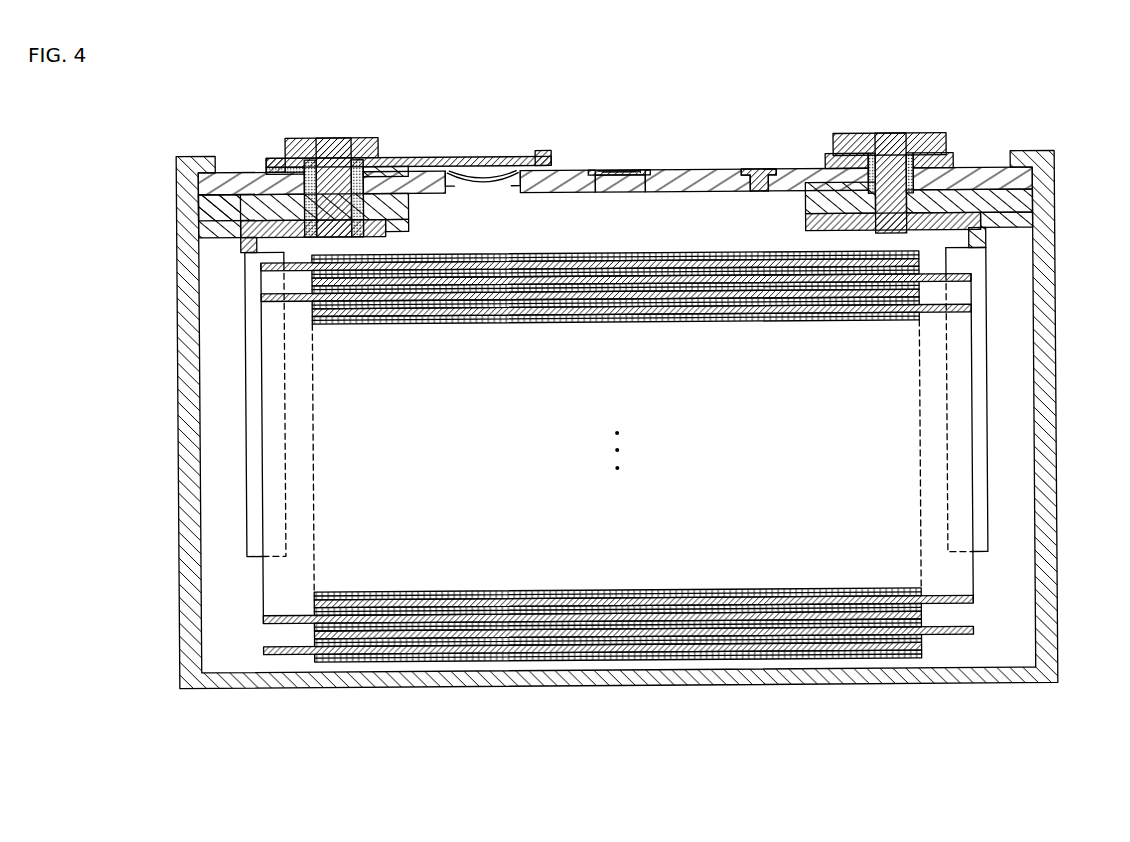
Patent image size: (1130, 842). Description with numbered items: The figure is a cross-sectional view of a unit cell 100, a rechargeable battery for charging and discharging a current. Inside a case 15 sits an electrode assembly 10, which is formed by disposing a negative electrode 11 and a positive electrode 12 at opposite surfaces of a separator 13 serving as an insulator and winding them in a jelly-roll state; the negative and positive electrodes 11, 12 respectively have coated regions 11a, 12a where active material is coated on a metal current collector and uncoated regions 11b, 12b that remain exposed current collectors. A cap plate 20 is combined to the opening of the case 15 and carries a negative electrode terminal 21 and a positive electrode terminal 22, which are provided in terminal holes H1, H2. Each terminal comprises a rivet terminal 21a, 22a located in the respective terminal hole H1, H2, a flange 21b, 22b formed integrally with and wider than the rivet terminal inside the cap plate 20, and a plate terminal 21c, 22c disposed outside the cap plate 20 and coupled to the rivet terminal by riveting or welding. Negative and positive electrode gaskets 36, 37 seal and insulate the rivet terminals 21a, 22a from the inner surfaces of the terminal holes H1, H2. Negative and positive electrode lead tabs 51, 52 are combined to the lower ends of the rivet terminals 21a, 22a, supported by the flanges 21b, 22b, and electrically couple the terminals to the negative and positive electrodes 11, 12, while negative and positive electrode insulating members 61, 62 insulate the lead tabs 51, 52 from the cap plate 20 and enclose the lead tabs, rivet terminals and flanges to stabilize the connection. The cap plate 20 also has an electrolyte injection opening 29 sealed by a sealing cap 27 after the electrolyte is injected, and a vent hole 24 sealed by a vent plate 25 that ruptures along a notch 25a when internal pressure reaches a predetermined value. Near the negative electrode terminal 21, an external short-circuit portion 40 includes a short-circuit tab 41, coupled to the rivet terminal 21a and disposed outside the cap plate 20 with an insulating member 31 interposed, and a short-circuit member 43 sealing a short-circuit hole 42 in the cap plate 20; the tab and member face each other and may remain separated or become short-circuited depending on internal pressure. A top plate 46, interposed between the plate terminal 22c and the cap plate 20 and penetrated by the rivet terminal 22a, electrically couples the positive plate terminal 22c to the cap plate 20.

The unit cell 100 is at (646, 77).
The electrode assembly 10 is at (624, 514).
The negative electrode 11 is at (592, 519).
The coated region 11a is at (278, 745).
The uncoated region 11b is at (293, 653).
The positive electrode 12 is at (650, 526).
The coated region 12a is at (845, 637).
The uncoated region 12b is at (830, 745).
The separator 13 is at (635, 655).
The case 15 is at (1045, 340).
The cap plate 20 is at (698, 182).
The negative electrode terminal 21 is at (328, 231).
The rivet terminal 21a is at (334, 250).
The flange 21b is at (385, 158).
The plate terminal 21c is at (356, 146).
The positive electrode terminal 22 is at (932, 173).
The rivet terminal 22a is at (893, 240).
The flange 22b is at (850, 218).
The plate terminal 22c is at (938, 137).
The vent hole 24 is at (618, 192).
The vent plate 25 is at (641, 170).
The notch 25a is at (614, 170).
The sealing cap 27 is at (765, 170).
The electrolyte injection opening 29 is at (755, 170).
The insulating member 31 is at (545, 150).
The negative electrode gasket 36 is at (268, 166).
The positive electrode gasket 37 is at (857, 155).
The external short-circuit portion 40 is at (412, 154).
The short-circuit tab 41 is at (441, 156).
The short-circuit hole 42 is at (516, 185).
The short-circuit member 43 is at (482, 182).
The top plate 46 is at (950, 158).
The negative electrode lead tab 51 is at (236, 372).
The positive electrode lead tab 52 is at (998, 513).
The negative electrode insulating member 61 is at (232, 214).
The positive electrode insulating member 62 is at (1015, 215).
The terminal hole H1 is at (314, 158).
The terminal hole H2 is at (910, 155).